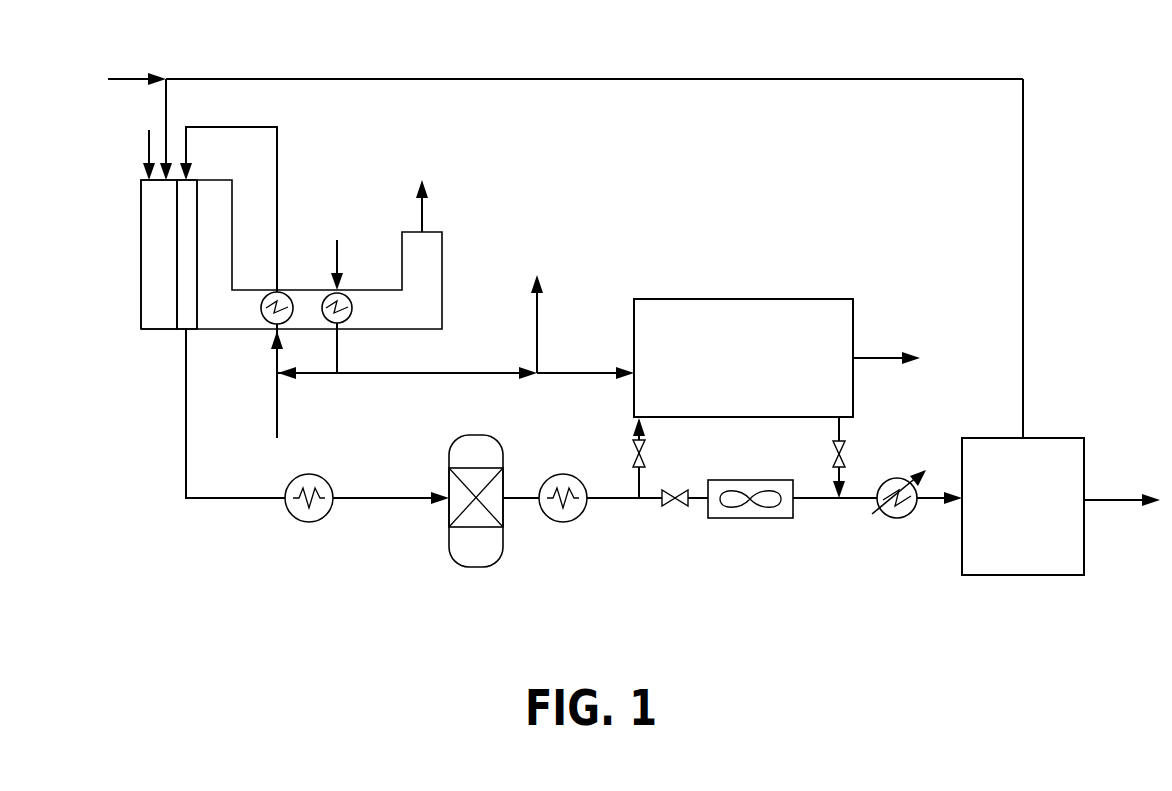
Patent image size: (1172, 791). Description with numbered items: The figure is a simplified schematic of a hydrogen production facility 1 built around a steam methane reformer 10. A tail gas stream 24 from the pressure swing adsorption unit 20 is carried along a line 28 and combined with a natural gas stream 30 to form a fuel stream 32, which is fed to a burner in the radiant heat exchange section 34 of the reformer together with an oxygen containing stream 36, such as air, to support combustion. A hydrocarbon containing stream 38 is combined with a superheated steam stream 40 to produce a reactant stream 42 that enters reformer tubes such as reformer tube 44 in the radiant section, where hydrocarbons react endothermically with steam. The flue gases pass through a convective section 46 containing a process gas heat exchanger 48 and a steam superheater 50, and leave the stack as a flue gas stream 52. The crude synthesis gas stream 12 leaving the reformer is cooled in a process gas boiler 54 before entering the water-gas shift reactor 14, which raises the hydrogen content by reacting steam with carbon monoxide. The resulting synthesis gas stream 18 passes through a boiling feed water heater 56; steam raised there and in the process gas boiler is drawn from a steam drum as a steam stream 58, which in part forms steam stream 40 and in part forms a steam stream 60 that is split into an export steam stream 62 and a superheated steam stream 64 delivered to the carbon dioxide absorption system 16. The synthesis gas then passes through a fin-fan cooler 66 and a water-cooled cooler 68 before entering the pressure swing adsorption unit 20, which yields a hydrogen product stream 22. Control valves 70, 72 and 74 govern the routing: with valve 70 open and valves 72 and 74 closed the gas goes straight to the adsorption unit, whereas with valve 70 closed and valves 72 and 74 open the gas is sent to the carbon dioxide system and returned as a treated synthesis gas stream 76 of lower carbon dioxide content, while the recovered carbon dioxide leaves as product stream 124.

The facility 1 is at (728, 31).
The steam methane reformer 10 is at (151, 330).
The crude synthesis gas stream 12 is at (185, 433).
The water-gas shift reactor 14 is at (478, 568).
The carbon dioxide absorption system 16 is at (715, 299).
The synthesis gas stream 18 is at (612, 500).
The pressure swing adsorption unit 20 is at (1015, 576).
The hydrogen product stream 22 is at (1113, 499).
The tail gas stream 24 is at (1023, 287).
The natural gas bypass line 28 is at (588, 79).
The natural gas stream 30 is at (125, 78).
The fuel stream 32 is at (166, 100).
The radiant heat exchange section 34 is at (141, 278).
The oxygen containing stream 36 is at (147, 146).
The hydrocarbon containing stream 38 is at (276, 409).
The superheated steam stream 40 is at (305, 374).
The reactant stream 42 is at (276, 364).
The reformer tube 44 is at (188, 279).
The convective section 46 is at (310, 300).
The process gas heat exchanger 48 is at (261, 303).
The steam superheater 50 is at (353, 305).
The flue gas stream 52 is at (423, 210).
The process gas boiler 54 is at (311, 522).
The boiling feed water heater 56 is at (565, 522).
The steam stream 58 is at (338, 258).
The steam stream 60 is at (416, 374).
The export steam stream 62 is at (538, 318).
The superheated steam stream 64 is at (560, 374).
The fin-fan cooler 66 is at (750, 519).
The water-cooled cooler 68 is at (895, 518).
The control valve 70 is at (672, 505).
The control valve 72 is at (646, 458).
The control valve 74 is at (835, 453).
The treated synthesis gas stream 76 is at (836, 483).
The carbon dioxide product stream 124 is at (873, 357).